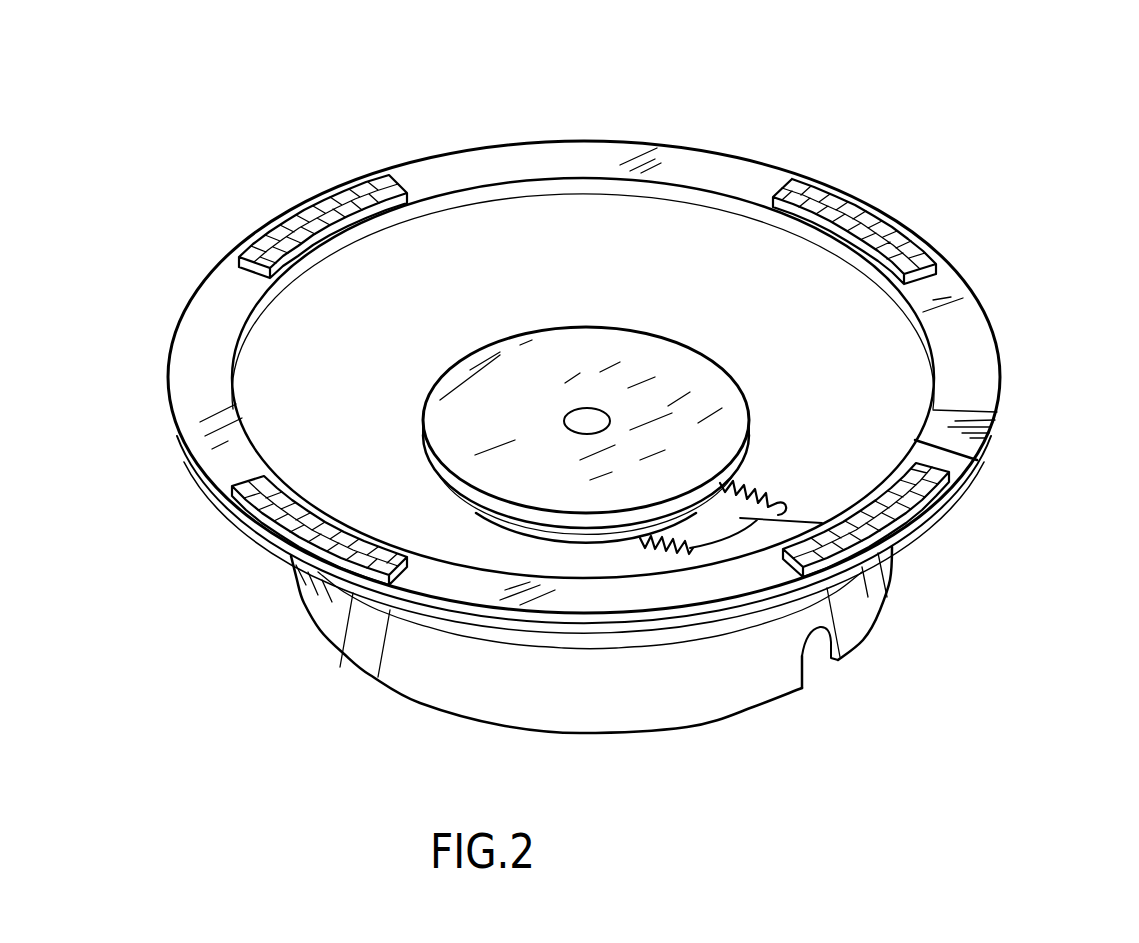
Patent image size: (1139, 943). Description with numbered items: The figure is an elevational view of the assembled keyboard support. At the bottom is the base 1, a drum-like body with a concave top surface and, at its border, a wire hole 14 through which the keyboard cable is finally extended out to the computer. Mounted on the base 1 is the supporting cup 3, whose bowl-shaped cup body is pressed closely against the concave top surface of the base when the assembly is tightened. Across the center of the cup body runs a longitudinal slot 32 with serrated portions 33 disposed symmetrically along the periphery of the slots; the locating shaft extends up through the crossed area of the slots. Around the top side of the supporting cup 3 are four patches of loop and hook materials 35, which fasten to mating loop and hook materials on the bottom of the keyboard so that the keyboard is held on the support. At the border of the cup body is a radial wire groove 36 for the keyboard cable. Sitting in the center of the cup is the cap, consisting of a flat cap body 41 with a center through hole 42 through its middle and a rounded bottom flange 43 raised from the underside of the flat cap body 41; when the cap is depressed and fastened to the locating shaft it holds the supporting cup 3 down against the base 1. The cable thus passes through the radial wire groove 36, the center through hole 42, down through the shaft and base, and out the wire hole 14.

The base 1 is at (697, 688).
The supporting cup 3 is at (453, 130).
The wire hole 14 is at (813, 656).
The longitudinal slot 32 is at (900, 537).
The serrated portions 33 is at (772, 497).
The loop and hook materials 35 is at (297, 207).
The radial wire groove 36 is at (978, 435).
The flat cap body 41 is at (622, 447).
The center through hole 42 is at (588, 418).
The rounded bottom flange 43 is at (593, 535).